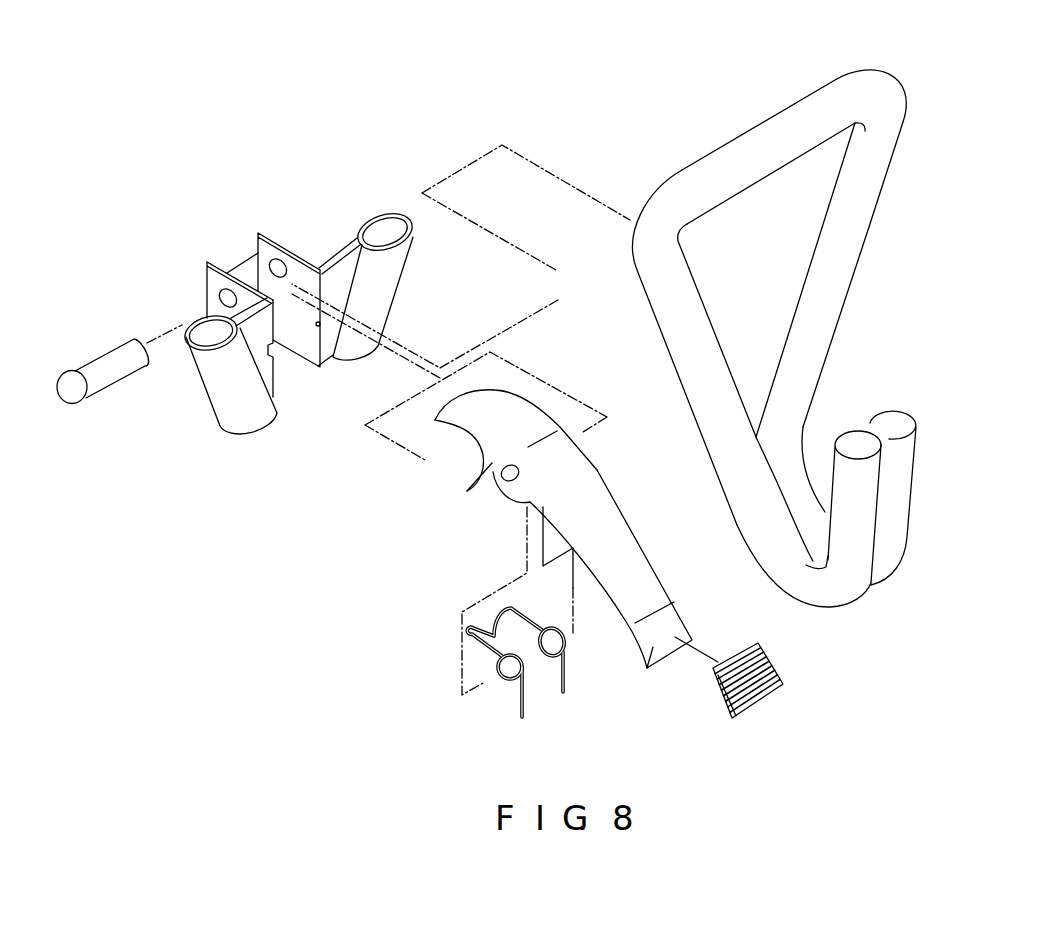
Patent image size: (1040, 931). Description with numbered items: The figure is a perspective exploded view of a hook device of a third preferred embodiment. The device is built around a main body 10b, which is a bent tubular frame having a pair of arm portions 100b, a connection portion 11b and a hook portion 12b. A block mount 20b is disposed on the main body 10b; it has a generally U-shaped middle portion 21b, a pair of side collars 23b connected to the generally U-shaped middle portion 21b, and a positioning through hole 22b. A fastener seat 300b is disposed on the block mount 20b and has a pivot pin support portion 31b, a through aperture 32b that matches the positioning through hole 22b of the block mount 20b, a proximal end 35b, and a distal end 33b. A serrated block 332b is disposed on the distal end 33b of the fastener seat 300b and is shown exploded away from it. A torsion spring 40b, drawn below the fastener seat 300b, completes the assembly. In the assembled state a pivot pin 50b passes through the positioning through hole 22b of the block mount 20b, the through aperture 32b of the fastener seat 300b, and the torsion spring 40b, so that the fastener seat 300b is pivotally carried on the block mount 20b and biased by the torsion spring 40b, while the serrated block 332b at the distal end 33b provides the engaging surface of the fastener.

The main body 10b is at (716, 114).
The arm portions 100b is at (873, 220).
The connection portion 11b is at (762, 438).
The hook portion 12b is at (910, 496).
The block mount 20b is at (322, 180).
The generally U-shaped middle portion 21b is at (243, 272).
The positioning through hole 22b is at (280, 260).
The side collars 23b is at (388, 284).
The pivot pin 50b is at (97, 368).
The fastener seat 300b is at (562, 346).
The proximal end 35b is at (492, 415).
The through aperture 32b is at (490, 466).
The pivot pin support portion 31b is at (508, 483).
The distal end 33b is at (650, 647).
The serrated block 332b is at (770, 678).
The torsion spring 40b is at (434, 672).